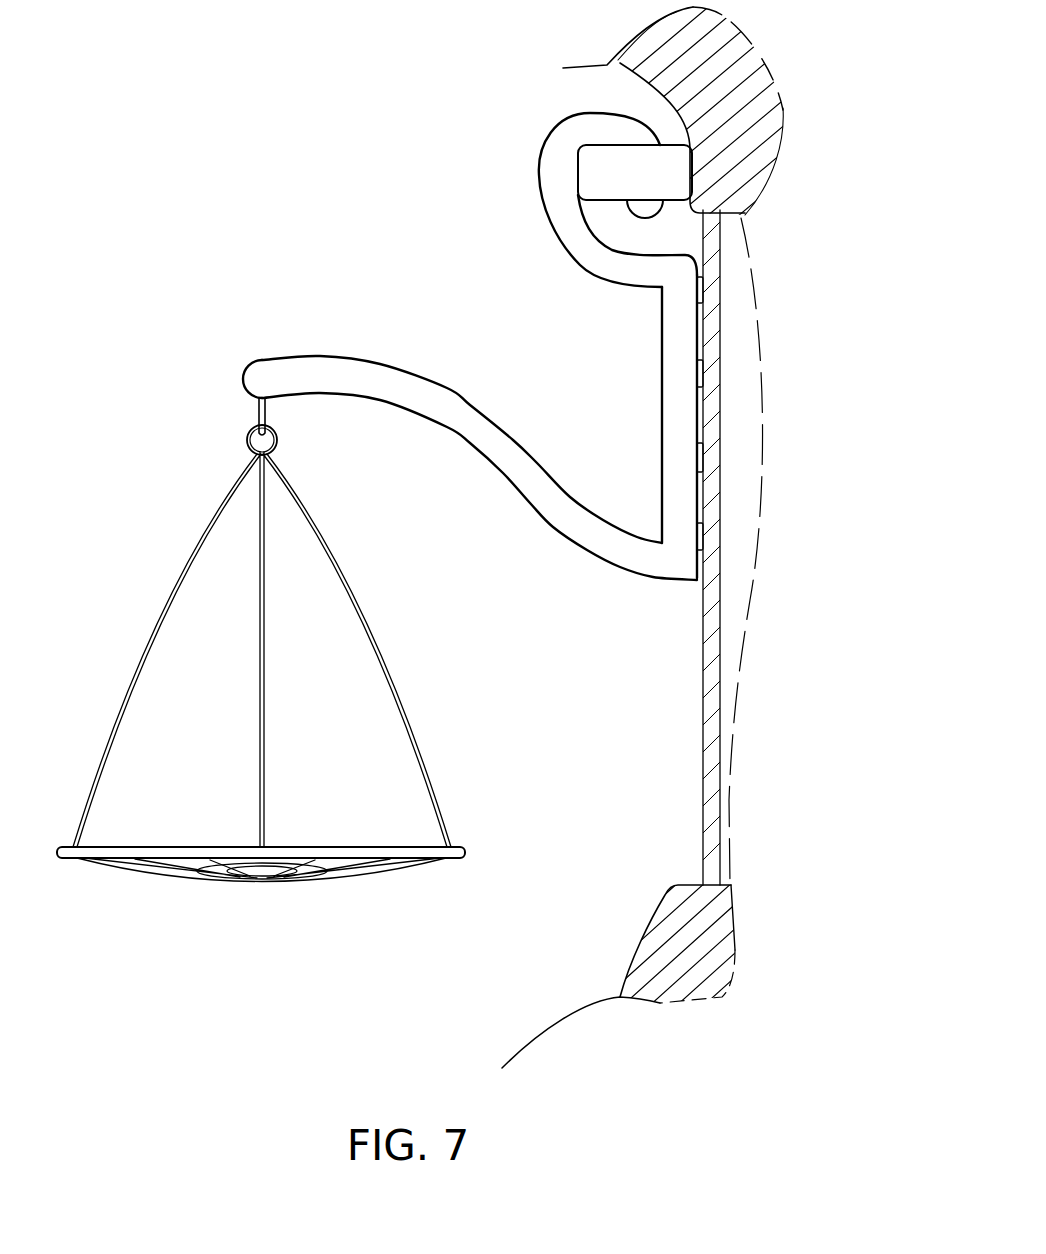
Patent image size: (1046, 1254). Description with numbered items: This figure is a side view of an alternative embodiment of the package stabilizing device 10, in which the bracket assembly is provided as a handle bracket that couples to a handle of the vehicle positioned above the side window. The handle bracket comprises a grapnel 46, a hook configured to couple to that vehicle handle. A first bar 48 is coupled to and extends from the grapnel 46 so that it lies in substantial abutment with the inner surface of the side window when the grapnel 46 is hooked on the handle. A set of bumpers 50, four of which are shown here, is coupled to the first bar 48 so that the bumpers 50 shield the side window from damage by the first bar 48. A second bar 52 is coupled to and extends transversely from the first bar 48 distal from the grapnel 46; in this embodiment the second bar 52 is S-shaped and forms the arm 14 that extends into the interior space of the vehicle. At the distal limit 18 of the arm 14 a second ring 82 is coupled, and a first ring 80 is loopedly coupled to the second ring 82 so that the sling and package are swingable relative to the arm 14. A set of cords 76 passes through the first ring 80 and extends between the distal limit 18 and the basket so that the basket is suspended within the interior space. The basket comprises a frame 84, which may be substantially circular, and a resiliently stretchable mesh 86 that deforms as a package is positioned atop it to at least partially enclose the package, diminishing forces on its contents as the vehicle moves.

The package stabilizing device 10 is at (288, 196).
The grapnel 46 is at (552, 182).
The bumpers 50 is at (700, 287).
The first bar 48 is at (675, 437).
The arm 14 is at (431, 494).
The second bar 52 is at (582, 530).
The distal limit 18 is at (252, 383).
The second ring 82 is at (257, 421).
The first ring 80 is at (247, 440).
The cords 76 is at (263, 677).
The frame 84 is at (375, 853).
The mesh 86 is at (195, 877).